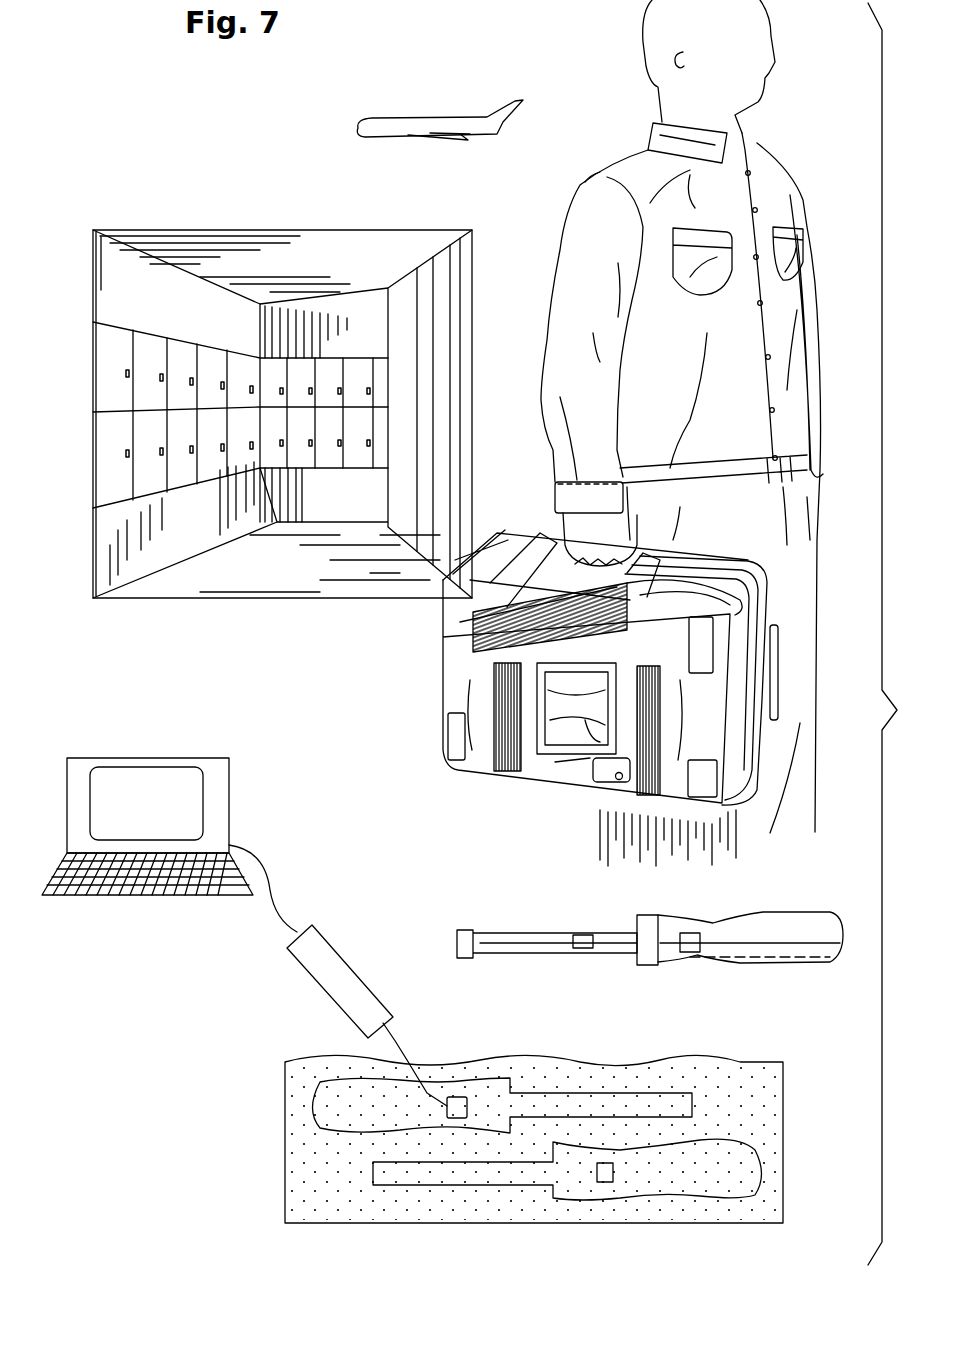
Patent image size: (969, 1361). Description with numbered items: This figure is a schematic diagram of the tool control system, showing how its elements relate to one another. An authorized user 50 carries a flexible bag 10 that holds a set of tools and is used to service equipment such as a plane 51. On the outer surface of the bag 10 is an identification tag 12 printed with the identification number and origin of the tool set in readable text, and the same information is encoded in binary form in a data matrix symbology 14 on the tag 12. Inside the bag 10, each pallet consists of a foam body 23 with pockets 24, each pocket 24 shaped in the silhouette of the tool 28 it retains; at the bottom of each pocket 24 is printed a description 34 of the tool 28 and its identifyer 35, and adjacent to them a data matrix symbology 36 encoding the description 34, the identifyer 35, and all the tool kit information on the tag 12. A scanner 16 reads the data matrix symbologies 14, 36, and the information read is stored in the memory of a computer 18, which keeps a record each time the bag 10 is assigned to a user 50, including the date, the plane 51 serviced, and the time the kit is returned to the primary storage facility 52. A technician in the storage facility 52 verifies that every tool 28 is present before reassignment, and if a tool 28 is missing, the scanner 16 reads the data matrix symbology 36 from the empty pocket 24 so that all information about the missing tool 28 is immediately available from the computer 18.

The flexible bag 10 is at (432, 675).
The identification tag 12 is at (572, 768).
The data matrix symbology 14 is at (604, 784).
The scanner 16 is at (332, 945).
The computer 18 is at (229, 800).
The foam body 23 is at (285, 1190).
The pocket 24 is at (608, 1187).
The tool 28 is at (777, 968).
The description 34 is at (757, 1160).
The identifyer 35 is at (717, 1182).
The data matrix symbology 36 is at (585, 950).
The authorized user 50 is at (789, 143).
The plane 51 is at (393, 118).
The primary storage facility 52 is at (208, 328).